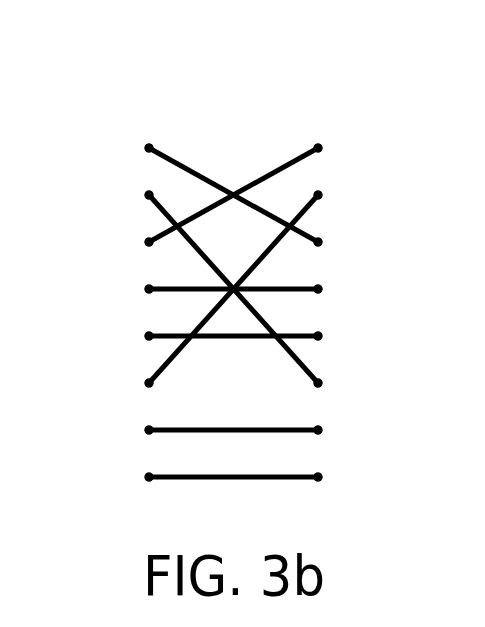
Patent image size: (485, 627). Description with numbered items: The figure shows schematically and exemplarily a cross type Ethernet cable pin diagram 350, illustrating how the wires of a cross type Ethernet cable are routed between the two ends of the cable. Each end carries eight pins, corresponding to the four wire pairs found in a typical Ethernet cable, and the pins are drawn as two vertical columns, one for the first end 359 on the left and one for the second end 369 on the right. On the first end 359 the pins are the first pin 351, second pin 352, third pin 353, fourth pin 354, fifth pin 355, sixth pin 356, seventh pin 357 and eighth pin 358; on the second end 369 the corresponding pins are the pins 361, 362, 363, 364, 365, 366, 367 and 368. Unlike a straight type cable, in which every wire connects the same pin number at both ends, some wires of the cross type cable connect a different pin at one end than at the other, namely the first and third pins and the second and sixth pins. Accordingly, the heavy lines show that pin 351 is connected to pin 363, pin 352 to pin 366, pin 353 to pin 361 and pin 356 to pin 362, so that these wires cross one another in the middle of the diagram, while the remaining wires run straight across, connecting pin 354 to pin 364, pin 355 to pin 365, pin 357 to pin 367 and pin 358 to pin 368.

The cross type Ethernet cable pin diagram 350 is at (234, 104).
The first end of the cross type Ethernet cable 359 is at (136, 113).
The second end of the cross type Ethernet cable 369 is at (334, 113).
The first pin 351 is at (145, 148).
The second pin 352 is at (145, 195).
The third pin 353 is at (145, 242).
The fourth pin 354 is at (145, 289).
The fifth pin 355 is at (145, 336).
The sixth pin 356 is at (145, 383).
The seventh pin 357 is at (145, 430).
The eighth pin 358 is at (145, 477).
The first pin at the other end 361 is at (322, 148).
The second pin at the other end 362 is at (322, 195).
The third pin at the other end 363 is at (322, 242).
The fourth pin at the other end 364 is at (322, 289).
The fifth pin at the other end 365 is at (322, 336).
The sixth pin at the other end 366 is at (322, 383).
The seventh pin at the other end 367 is at (322, 430).
The eighth pin at the other end 368 is at (322, 477).